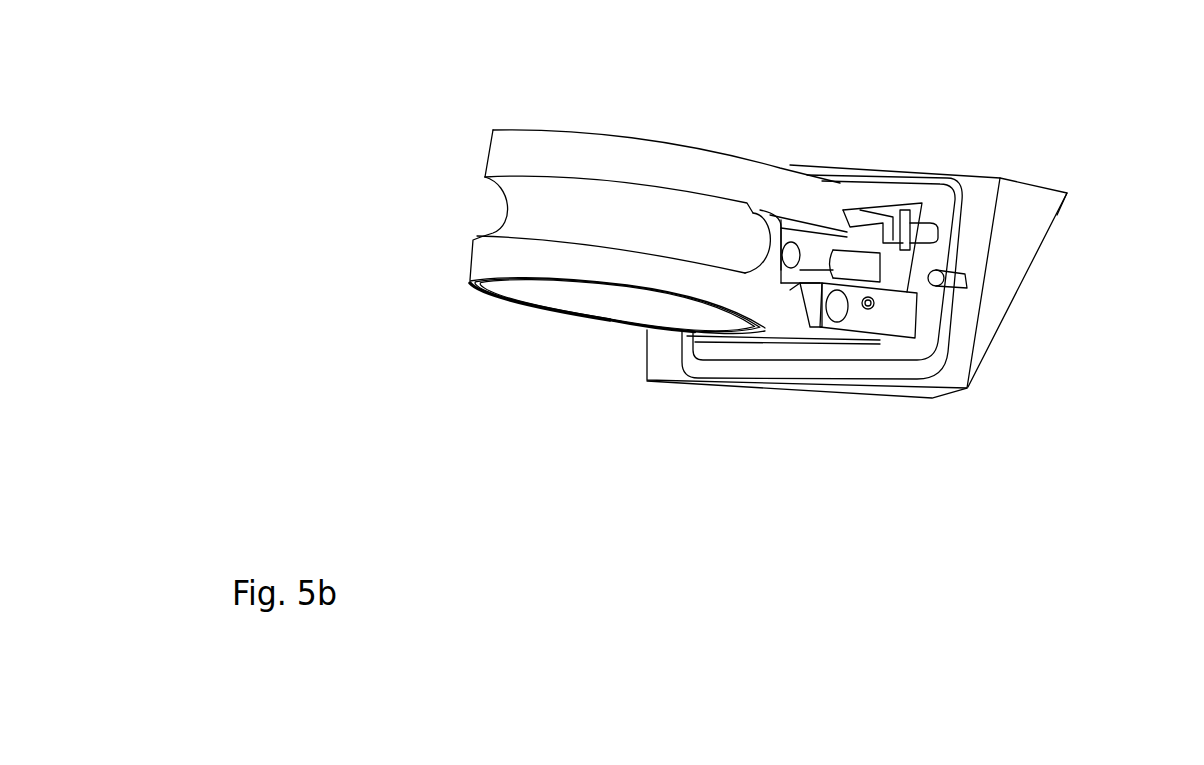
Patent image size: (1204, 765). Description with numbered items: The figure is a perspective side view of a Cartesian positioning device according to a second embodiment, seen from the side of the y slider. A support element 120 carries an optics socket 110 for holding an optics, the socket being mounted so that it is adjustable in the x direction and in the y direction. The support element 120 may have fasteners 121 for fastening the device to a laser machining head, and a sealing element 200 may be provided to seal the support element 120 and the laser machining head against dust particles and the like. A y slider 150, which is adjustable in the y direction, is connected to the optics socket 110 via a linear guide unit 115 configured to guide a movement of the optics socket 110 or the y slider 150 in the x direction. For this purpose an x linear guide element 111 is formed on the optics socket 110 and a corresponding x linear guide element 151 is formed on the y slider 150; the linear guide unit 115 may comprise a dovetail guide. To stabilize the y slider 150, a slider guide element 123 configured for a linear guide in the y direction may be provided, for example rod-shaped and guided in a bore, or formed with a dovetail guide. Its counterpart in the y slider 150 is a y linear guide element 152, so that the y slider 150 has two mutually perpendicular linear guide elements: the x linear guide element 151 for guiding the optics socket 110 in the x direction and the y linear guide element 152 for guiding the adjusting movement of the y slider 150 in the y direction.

The optics socket 110 is at (520, 142).
The x linear guide element 111 is at (910, 198).
The linear guide unit 115 is at (1037, 107).
The support element 120 is at (1028, 213).
The fasteners 121 is at (947, 268).
The slider guide element 123 is at (788, 318).
The y slider 150 is at (818, 237).
The x linear guide element 151 is at (855, 207).
The y linear guide element 152 is at (782, 283).
The sealing element 200 is at (895, 358).